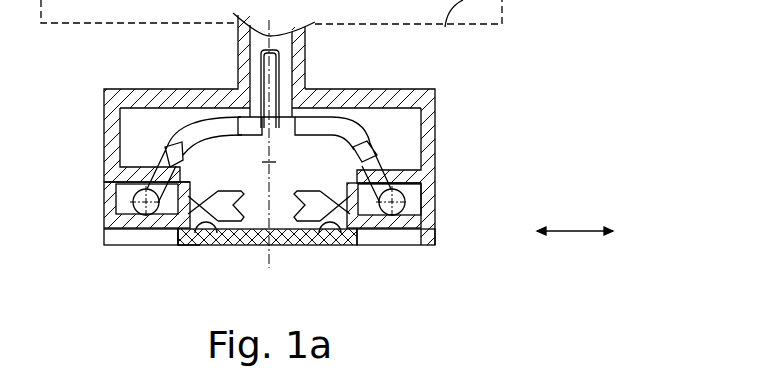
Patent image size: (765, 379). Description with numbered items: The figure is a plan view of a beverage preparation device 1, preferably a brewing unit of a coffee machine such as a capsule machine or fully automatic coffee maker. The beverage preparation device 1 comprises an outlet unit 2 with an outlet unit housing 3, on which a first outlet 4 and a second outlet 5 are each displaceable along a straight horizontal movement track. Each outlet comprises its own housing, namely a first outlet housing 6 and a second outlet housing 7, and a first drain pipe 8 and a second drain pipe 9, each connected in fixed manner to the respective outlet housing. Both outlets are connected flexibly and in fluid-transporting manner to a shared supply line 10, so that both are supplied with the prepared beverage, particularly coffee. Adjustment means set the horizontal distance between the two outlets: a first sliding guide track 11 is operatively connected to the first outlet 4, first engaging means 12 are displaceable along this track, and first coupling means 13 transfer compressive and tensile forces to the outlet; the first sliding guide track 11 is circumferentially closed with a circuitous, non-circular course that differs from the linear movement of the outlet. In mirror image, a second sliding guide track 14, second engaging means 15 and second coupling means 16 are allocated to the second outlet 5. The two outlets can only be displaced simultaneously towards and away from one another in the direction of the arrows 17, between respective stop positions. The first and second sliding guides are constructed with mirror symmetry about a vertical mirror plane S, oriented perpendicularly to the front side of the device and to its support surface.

The beverage preparation device 1 is at (525, 0).
The outlet unit 2 is at (441, 127).
The outlet unit housing 3 is at (437, 153).
The first outlet 4 is at (430, 197).
The second outlet 5 is at (102, 235).
The first outlet housing 6 is at (429, 221).
The second outlet housing 7 is at (140, 210).
The first drain pipe 8 is at (393, 222).
The second drain pipe 9 is at (157, 223).
The shared supply line 10 is at (283, 108).
The mirror plane S is at (269, 167).
The first sliding guide track 11 is at (294, 245).
The first engaging means 12 is at (323, 242).
The first coupling means 13 is at (336, 226).
The second sliding guide track 14 is at (233, 222).
The second engaging means 15 is at (213, 233).
The second coupling means 16 is at (192, 233).
The arrows 17 is at (579, 229).